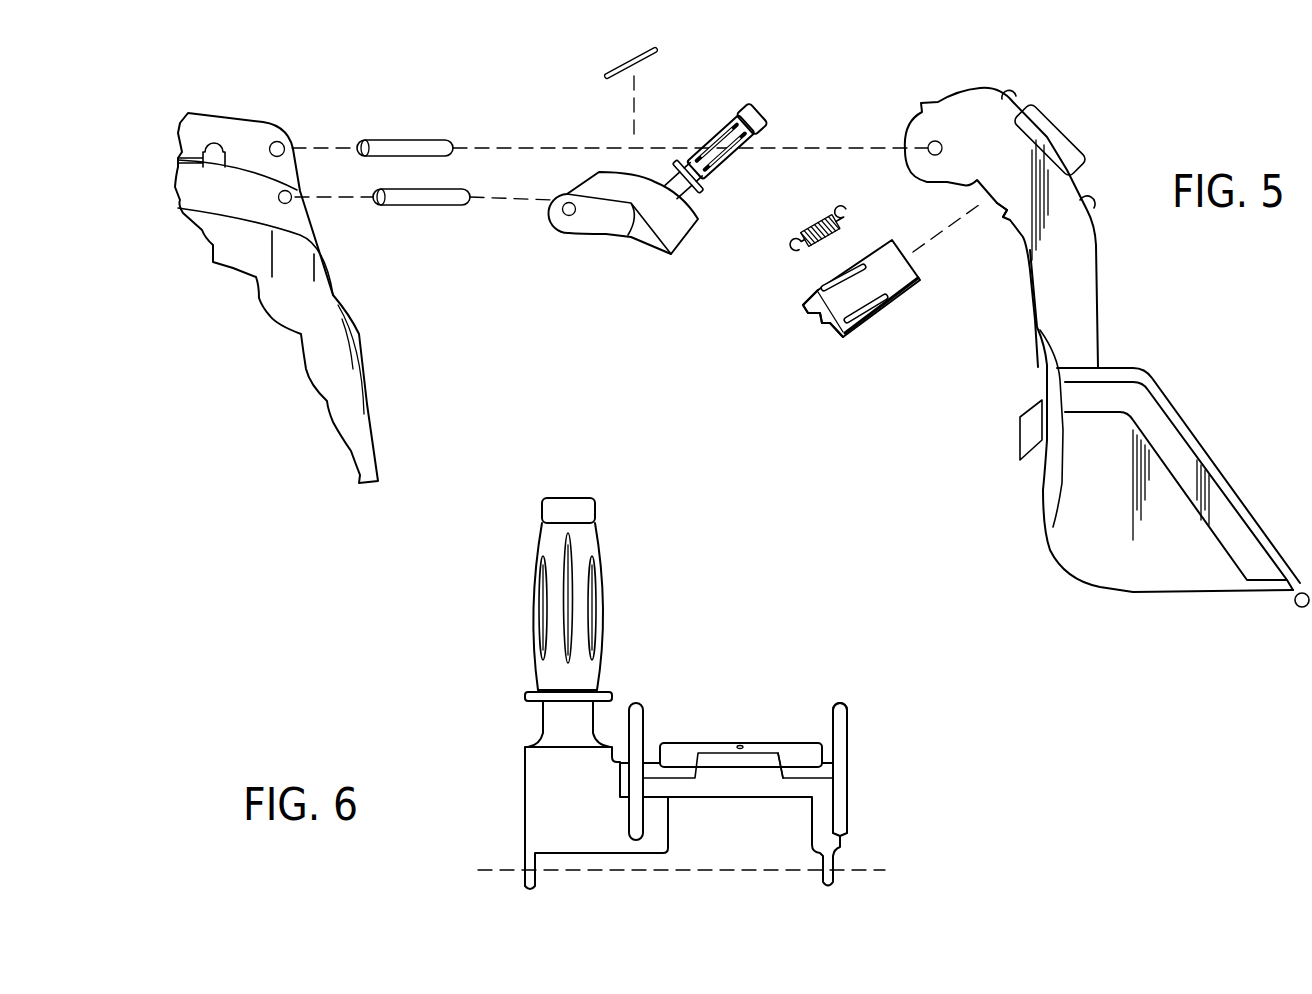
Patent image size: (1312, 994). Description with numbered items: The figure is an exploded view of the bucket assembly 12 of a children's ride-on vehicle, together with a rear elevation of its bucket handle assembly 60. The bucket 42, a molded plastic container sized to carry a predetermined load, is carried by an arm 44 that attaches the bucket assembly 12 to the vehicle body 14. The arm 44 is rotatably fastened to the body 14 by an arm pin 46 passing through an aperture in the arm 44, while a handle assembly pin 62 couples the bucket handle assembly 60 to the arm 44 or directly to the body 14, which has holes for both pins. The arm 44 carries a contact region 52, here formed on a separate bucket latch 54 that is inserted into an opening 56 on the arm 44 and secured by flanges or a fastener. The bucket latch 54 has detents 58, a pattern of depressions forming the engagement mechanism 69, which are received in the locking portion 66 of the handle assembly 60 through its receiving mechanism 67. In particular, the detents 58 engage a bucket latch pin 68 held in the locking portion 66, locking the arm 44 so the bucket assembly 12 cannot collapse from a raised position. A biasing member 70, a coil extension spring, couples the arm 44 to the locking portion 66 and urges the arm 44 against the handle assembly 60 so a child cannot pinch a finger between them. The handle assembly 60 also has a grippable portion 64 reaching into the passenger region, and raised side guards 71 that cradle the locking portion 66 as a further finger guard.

In FIG. 5, the bucket assembly 12 is at (1107, 347).
In FIG. 5, the body 14 is at (251, 135).
In FIG. 5, the bucket 42 is at (1083, 553).
In FIG. 5, the arm 44 is at (1033, 227).
In FIG. 5, the arm pin 46 is at (403, 145).
In FIG. 5, the contact region 52 is at (842, 340).
In FIG. 5, the bucket latch 54 is at (846, 340).
In FIG. 5, the opening 56 is at (993, 203).
In FIG. 5, the detents 58 is at (818, 320).
In FIG. 5, the bucket handle assembly 60 is at (674, 190).
In FIG. 6, the bucket handle assembly 60 is at (728, 706).
In FIG. 5, the handle assembly pin 62 is at (403, 203).
In FIG. 5, the grippable portion 64 is at (751, 132).
In FIG. 6, the grippable portion 64 is at (546, 613).
In FIG. 5, the locking portion 66 is at (640, 169).
In FIG. 6, the locking portion 66 is at (768, 745).
In FIG. 6, the receiving mechanism 67 is at (806, 735).
In FIG. 5, the bucket latch pin 68 is at (620, 68).
In FIG. 5, the engagement mechanism 69 is at (818, 344).
In FIG. 5, the biasing member 70 is at (807, 225).
In FIG. 6, the raised side guards 71 is at (638, 700).